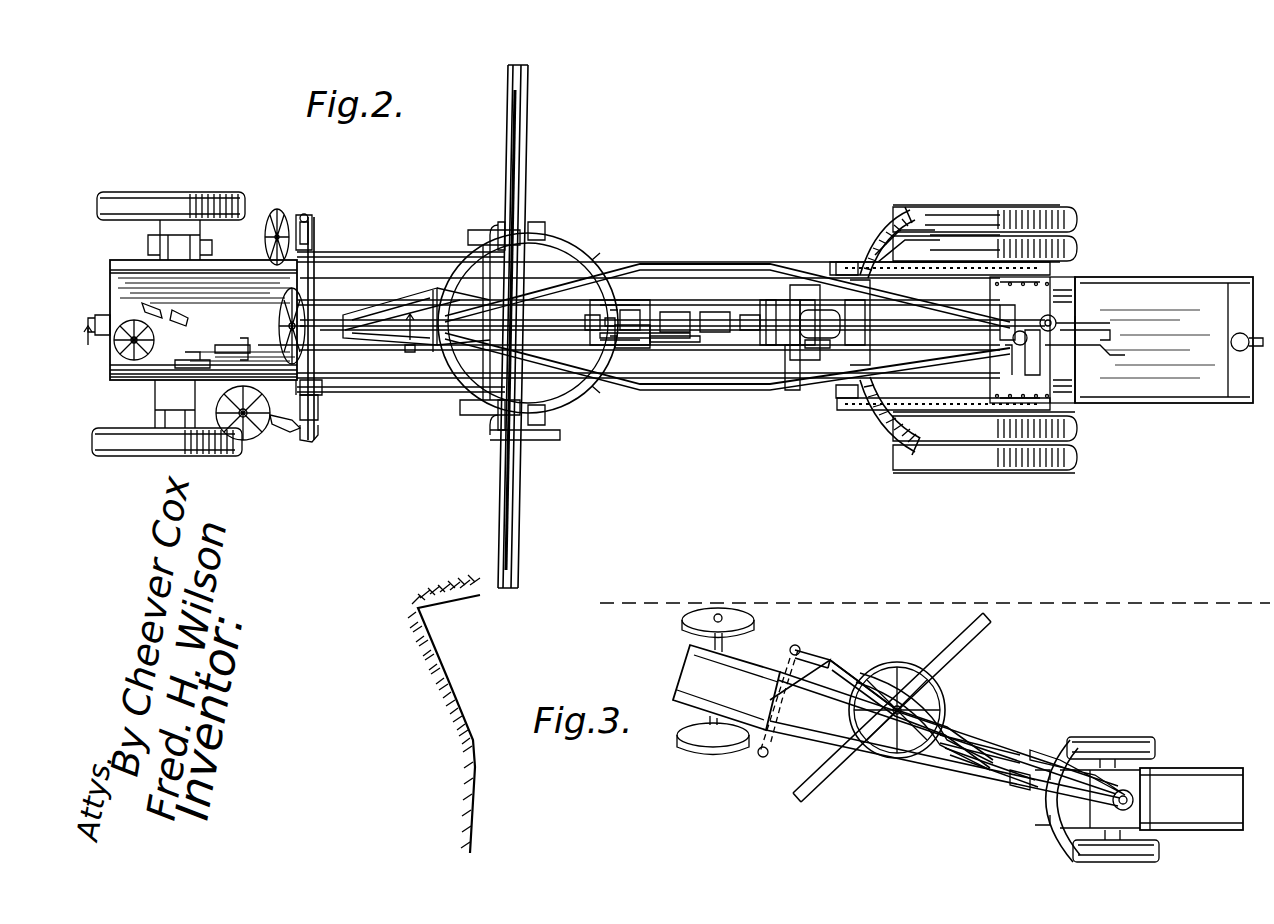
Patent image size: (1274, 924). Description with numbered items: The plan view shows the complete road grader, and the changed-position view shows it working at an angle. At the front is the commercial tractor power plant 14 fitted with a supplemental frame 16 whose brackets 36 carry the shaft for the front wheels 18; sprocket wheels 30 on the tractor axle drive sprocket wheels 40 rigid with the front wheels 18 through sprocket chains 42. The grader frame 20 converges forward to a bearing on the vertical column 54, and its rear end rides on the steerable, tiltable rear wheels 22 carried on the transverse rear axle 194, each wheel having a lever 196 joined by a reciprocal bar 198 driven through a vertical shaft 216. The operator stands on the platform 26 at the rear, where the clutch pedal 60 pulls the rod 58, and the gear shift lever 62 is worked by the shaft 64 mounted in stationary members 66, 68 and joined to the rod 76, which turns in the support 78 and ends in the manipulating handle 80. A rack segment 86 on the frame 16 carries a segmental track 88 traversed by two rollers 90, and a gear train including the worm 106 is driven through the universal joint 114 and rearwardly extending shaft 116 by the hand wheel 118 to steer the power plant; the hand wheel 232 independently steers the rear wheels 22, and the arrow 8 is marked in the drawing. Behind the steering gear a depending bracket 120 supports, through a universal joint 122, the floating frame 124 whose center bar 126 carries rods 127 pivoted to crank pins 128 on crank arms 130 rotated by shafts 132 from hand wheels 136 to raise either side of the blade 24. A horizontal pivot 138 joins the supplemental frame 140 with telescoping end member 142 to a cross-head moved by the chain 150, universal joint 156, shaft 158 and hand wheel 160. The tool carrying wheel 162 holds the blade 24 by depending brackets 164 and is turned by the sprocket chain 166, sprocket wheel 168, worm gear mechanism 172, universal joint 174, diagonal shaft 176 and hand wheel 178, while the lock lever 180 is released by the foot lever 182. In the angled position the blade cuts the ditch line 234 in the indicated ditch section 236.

In FIG. 2, the direction arrow 8 is at (86, 346).
In FIG. 2, the power plant 14 is at (1150, 335).
In FIG. 3, the power plant 14 is at (1200, 770).
In FIG. 2, the supplemental frame 16 is at (1068, 282).
In FIG. 3, the supplemental frame 16 is at (1040, 838).
In FIG. 2, the front wheels 18 is at (1078, 222).
In FIG. 3, the front wheels 18 is at (1150, 742).
In FIG. 2, the grader frame 20 is at (700, 264).
In FIG. 3, the grader frame 20 is at (1000, 740).
In FIG. 2, the rear wheels 22 is at (185, 200).
In FIG. 3, the rear wheels 22 is at (735, 612).
In FIG. 2, the road working blade 24 is at (522, 521).
In FIG. 3, the road working blade 24 is at (820, 778).
In FIG. 2, the operator's station platform 26 is at (120, 268).
In FIG. 3, the operator's station platform 26 is at (690, 683).
In FIG. 2, the sprocket wheel 30 is at (838, 262).
In FIG. 2, the bracket 36 is at (865, 320).
In FIG. 2, the sprocket wheel 40 is at (1050, 210).
In FIG. 2, the sprocket chain 42 is at (975, 262).
In FIG. 2, the column 54 is at (1110, 352).
In FIG. 2, the rod 58 is at (640, 348).
In FIG. 2, the clutch pedal 60 is at (185, 360).
In FIG. 2, the gear shift lever 62 is at (1055, 320).
In FIG. 2, the shaft 64 is at (1095, 338).
In FIG. 2, the stationary member 66 is at (1080, 323).
In FIG. 2, the stationary member 68 is at (1010, 318).
In FIG. 2, the rod 76 is at (795, 300).
In FIG. 2, the support 78 is at (470, 395).
In FIG. 2, the manipulating handle 80 is at (410, 340).
In FIG. 2, the rack segment 86 is at (935, 240).
In FIG. 2, the segmental track 88 is at (900, 228).
In FIG. 2, the rollers 90 is at (860, 262).
In FIG. 2, the worm 106 is at (895, 330).
In FIG. 2, the universal joint 114 is at (820, 348).
In FIG. 2, the rearwardly extending shaft 116 is at (790, 390).
In FIG. 2, the hand wheel 118 is at (279, 312).
In FIG. 2, the depending bracket 120 is at (770, 305).
In FIG. 3, the depending bracket 120 is at (1045, 755).
In FIG. 2, the universal joint 122 is at (760, 355).
In FIG. 3, the universal joint 122 is at (1015, 798).
In FIG. 2, the floating frame 124 is at (565, 300).
In FIG. 3, the floating frame 124 is at (878, 660).
In FIG. 2, the center bar 126 is at (560, 418).
In FIG. 2, the rod 127 is at (520, 222).
In FIG. 2, the crank pin 128 is at (545, 225).
In FIG. 2, the crank arm 130 is at (480, 245).
In FIG. 2, the shaft 132 is at (385, 262).
In FIG. 2, the hand wheel 136 is at (355, 270).
In FIG. 2, the horizontal pivot 138 is at (442, 320).
In FIG. 2, the supplemental frame 140 is at (390, 312).
In FIG. 3, the supplemental frame 140 is at (830, 700).
In FIG. 2, the telescoping end member 142 is at (345, 318).
In FIG. 3, the telescoping end member 142 is at (815, 660).
In FIG. 2, the chain 150 is at (315, 400).
In FIG. 2, the universal joint 156 is at (315, 425).
In FIG. 2, the shaft 158 is at (285, 430).
In FIG. 2, the hand wheel 160 is at (250, 438).
In FIG. 2, the tool carrying wheel 162 is at (575, 385).
In FIG. 3, the tool carrying wheel 162 is at (904, 664).
In FIG. 2, the depending brackets 164 is at (665, 338).
In FIG. 2, the sprocket chain 166 is at (712, 312).
In FIG. 2, the sprocket wheel 168 is at (612, 320).
In FIG. 2, the worm gear mechanism 172 is at (665, 345).
In FIG. 2, the universal joint 174 is at (690, 315).
In FIG. 2, the diagonal shaft 176 is at (410, 235).
In FIG. 2, the hand wheel 178 is at (287, 230).
In FIG. 2, the lock lever 180 is at (628, 312).
In FIG. 2, the foot lever 182 is at (228, 345).
In FIG. 2, the rear axle 194 is at (150, 248).
In FIG. 2, the lever 196 is at (185, 236).
In FIG. 2, the bar 198 is at (205, 250).
In FIG. 2, the shaft 216 is at (150, 305).
In FIG. 2, the hand wheel 232 is at (121, 356).
In FIG. 3, the ditch line 234 is at (935, 606).
In FIG. 2, the ditch section 236 is at (482, 598).